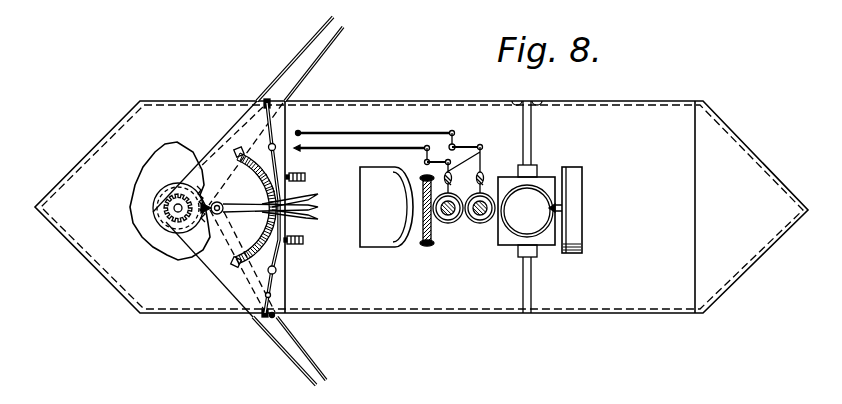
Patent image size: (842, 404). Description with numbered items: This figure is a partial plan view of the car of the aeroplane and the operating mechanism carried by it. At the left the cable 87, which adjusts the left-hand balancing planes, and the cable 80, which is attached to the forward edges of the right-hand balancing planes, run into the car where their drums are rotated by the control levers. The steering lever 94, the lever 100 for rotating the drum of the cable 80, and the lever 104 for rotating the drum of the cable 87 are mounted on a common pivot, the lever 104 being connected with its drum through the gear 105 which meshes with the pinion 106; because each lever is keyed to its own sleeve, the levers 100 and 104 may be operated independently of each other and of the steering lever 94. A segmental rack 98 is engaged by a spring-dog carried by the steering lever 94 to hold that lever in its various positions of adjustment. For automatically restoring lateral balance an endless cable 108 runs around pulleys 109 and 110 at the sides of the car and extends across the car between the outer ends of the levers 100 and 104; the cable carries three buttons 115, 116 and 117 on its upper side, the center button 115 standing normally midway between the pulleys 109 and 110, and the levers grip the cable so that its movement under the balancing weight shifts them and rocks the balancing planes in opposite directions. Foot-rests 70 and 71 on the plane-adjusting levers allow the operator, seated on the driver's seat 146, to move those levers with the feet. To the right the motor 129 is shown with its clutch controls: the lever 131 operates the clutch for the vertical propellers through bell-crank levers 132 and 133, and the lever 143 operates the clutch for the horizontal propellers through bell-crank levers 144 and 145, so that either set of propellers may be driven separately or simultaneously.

The cable 87 is at (322, 52).
The pulley 110 is at (266, 98).
The endless cable 108 is at (266, 120).
The button 117 is at (269, 146).
The button 115 is at (257, 199).
The segmental rack 98 is at (262, 235).
The pinion 106 is at (165, 216).
The gear 105 is at (203, 230).
The pulley 109 is at (270, 316).
The cable 80 is at (322, 371).
The button 116 is at (277, 274).
The foot-rest 70 is at (298, 247).
The foot-rest 71 is at (306, 178).
The lever 104 is at (312, 195).
The steering lever 94 is at (318, 207).
The lever 100 is at (315, 219).
The lever 131 is at (298, 130).
The lever 143 is at (303, 150).
The bell-crank lever 144 is at (425, 157).
The bell-crank lever 132 is at (465, 147).
The bell-crank lever 145 is at (483, 155).
The bell-crank lever 133 is at (486, 178).
The driver's seat 146 is at (385, 232).
The motor 129 is at (520, 219).